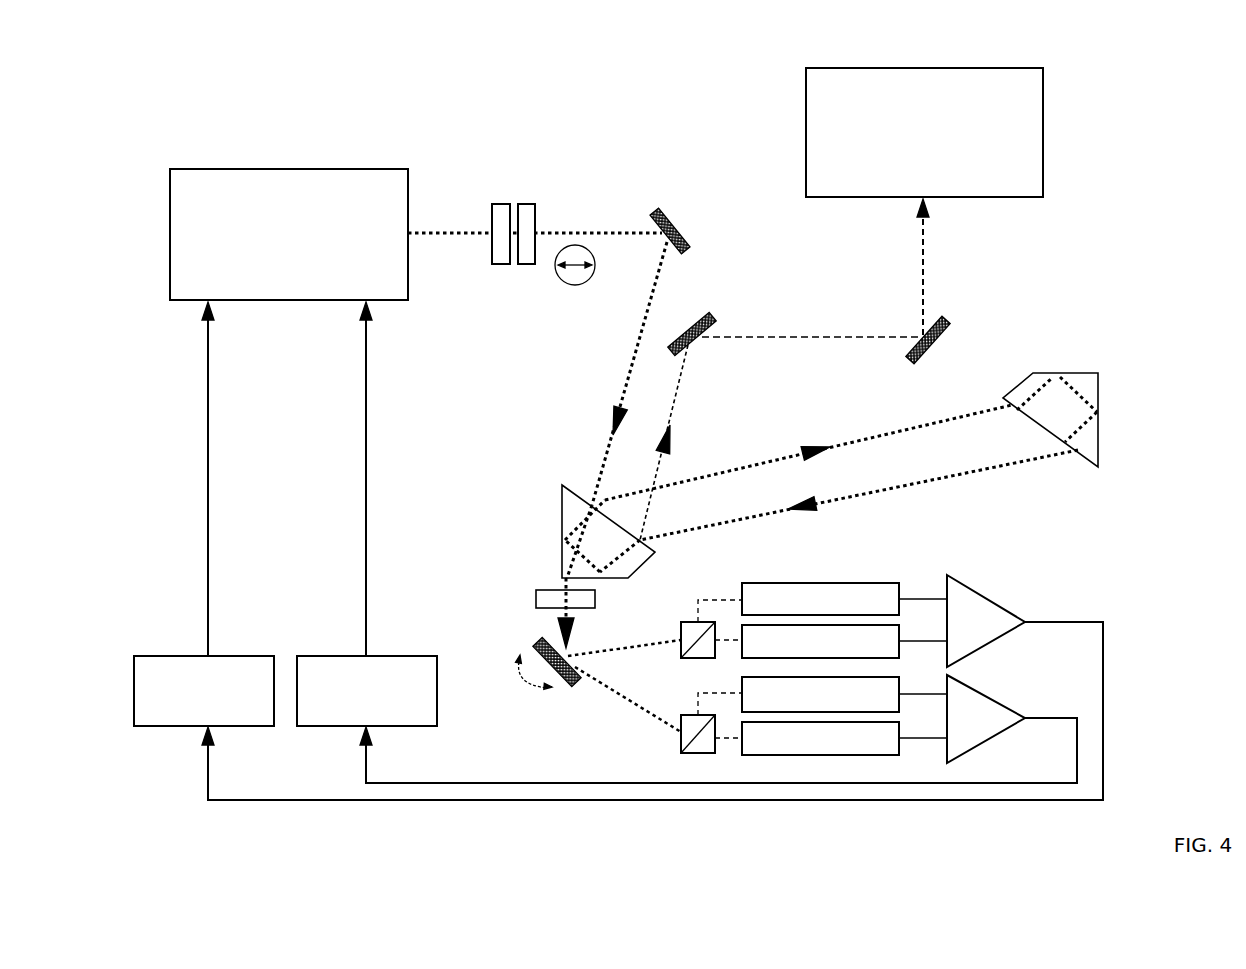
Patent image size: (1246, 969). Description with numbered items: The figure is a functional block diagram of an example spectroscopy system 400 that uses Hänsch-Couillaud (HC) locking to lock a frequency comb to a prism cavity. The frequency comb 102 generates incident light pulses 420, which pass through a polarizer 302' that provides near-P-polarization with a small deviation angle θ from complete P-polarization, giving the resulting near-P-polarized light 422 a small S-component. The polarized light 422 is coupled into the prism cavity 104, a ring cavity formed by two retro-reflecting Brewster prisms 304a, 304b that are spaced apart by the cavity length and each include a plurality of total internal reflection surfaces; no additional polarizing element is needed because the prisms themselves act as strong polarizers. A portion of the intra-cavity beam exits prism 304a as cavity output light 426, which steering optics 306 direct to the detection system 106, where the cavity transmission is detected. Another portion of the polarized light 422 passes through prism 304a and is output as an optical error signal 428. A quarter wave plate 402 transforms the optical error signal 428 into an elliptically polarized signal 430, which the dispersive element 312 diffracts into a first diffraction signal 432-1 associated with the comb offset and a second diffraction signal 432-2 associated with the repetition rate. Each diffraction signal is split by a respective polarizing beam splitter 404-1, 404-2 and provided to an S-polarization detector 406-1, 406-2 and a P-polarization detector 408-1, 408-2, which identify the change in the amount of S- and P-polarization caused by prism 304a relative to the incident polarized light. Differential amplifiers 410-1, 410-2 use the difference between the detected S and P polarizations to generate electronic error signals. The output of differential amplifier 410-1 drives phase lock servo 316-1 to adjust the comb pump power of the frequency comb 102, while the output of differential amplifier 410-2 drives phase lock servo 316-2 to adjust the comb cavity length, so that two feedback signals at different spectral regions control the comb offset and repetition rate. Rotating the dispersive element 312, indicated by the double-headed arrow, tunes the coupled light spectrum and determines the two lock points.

The system 400 is at (561, 66).
The frequency comb 102 is at (275, 291).
The detection system 106 is at (916, 187).
The prism cavity 104 is at (1052, 497).
The polarizer 302' is at (515, 228).
The incident light pulses 420 is at (448, 228).
The near-P-polarized light 422 is at (605, 230).
The steering optics 306 is at (712, 238).
The cavity output light 426 is at (690, 397).
The retro-reflecting Brewster prism 304a is at (561, 520).
The retro-reflecting Brewster prism 304b is at (1099, 422).
The optical error signal 428 is at (561, 580).
The quarter wave plate 402 is at (535, 600).
The elliptically polarized signal 430 is at (560, 620).
The dispersive element 312 is at (572, 687).
The first diffraction signal 432-1 is at (609, 648).
The second diffraction signal 432-2 is at (602, 688).
The polarizing beam splitter 404-1 is at (688, 620).
The polarizing beam splitter 404-2 is at (698, 755).
The S-polarization detector 406-1 is at (857, 583).
The P-polarization detector 408-1 is at (893, 628).
The S-polarization detector 406-2 is at (893, 712).
The P-polarization detector 408-2 is at (788, 757).
The differential amplifier 410-1 is at (1003, 605).
The differential amplifier 410-2 is at (1005, 705).
The phase lock servo 316-1 is at (178, 655).
The phase lock servo 316-2 is at (336, 655).